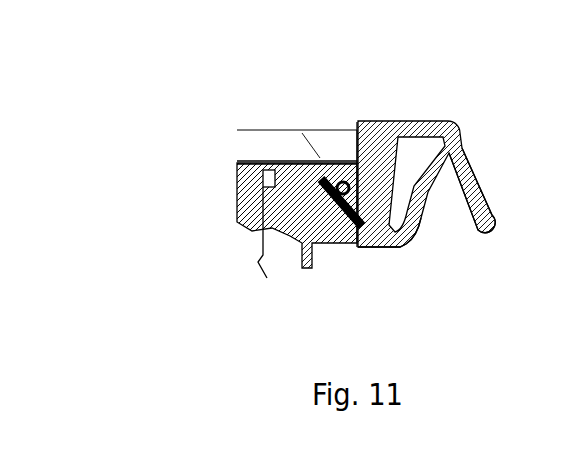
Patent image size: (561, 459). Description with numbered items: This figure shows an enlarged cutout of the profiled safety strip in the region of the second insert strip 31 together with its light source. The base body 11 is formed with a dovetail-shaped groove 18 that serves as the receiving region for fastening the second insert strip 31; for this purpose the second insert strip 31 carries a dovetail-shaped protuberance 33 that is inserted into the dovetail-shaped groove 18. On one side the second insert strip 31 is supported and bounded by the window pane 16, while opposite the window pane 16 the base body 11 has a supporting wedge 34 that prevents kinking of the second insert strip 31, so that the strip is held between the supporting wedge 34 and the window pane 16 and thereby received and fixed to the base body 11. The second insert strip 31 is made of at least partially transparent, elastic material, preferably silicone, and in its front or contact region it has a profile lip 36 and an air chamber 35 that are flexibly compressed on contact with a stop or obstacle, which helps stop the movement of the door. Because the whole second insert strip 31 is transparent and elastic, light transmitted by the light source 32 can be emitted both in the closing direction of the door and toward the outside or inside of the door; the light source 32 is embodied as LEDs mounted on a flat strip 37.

The base body 11 is at (237, 180).
The window pane 16 is at (311, 133).
The dovetail-shaped groove 18 is at (248, 202).
The second insert strip 31 is at (394, 130).
The light source 32 is at (362, 124).
The dovetail-shaped protuberance 33 is at (268, 252).
The supporting wedge 34 is at (332, 238).
The air chamber 35 is at (398, 212).
The profile lip 36 is at (487, 193).
The flat strip 37 is at (358, 247).